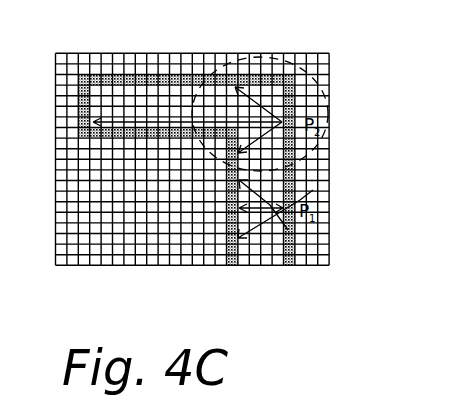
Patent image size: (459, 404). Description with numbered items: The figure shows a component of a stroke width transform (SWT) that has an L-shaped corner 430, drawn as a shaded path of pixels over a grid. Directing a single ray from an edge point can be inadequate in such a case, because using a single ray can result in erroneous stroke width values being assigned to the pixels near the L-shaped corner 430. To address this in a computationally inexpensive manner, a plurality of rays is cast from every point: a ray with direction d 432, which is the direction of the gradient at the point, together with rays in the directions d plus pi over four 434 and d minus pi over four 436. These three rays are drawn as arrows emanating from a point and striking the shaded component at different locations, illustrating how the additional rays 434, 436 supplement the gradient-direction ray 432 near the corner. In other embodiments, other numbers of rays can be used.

The L-shaped corner 430 is at (268, 60).
The ray with direction d 432 is at (313, 190).
The ray with direction d+Π/4 434 is at (263, 189).
The ray with direction d−Π/4 436 is at (260, 226).